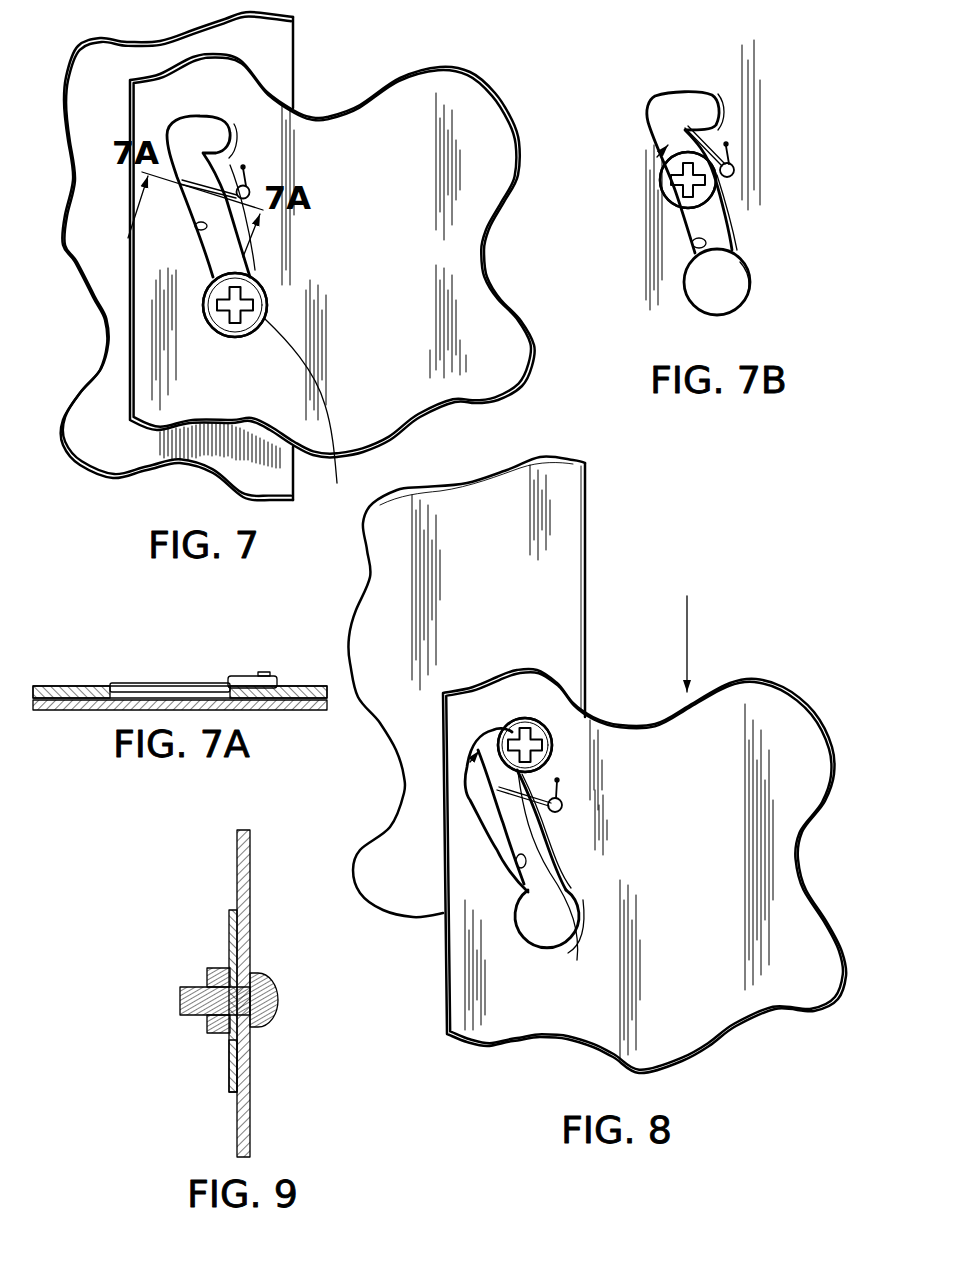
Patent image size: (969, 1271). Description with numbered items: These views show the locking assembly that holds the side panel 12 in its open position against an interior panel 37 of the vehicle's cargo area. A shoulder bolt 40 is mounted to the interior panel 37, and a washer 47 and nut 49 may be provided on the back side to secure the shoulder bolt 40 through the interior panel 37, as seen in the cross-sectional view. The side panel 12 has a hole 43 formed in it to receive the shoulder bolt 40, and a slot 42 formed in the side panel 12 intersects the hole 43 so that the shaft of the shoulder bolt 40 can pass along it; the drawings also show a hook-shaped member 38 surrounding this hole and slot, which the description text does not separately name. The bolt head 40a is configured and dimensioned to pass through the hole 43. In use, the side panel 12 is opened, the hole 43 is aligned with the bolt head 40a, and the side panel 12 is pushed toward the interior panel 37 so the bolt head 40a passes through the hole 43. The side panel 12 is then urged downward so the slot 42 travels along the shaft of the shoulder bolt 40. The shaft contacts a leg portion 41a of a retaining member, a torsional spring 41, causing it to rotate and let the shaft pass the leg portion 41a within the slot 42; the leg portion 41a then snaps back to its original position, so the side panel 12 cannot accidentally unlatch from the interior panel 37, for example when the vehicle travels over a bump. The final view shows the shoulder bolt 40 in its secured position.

In FIG. 7, the side panel 12 is at (389, 160).
In FIG. 7B, the side panel 12 is at (697, 339).
In FIG. 7A, the side panel 12 is at (73, 686).
In FIG. 9, the side panel 12 is at (250, 863).
In FIG. 8, the side panel 12 is at (692, 776).
In FIG. 7, the interior panel 37 is at (275, 41).
In FIG. 7A, the interior panel 37 is at (70, 710).
In FIG. 9, the interior panel 37 is at (233, 903).
In FIG. 8, the interior panel 37 is at (513, 601).
In FIG. 7, the hook 38 is at (190, 136).
In FIG. 7B, the hook 38 is at (667, 103).
In FIG. 8, the hook 38 is at (524, 840).
In FIG. 7, the shoulder bolt 40 is at (204, 305).
In FIG. 7B, the shoulder bolt 40 is at (688, 180).
In FIG. 7A, the shoulder bolt 40 is at (322, 676).
In FIG. 9, the shoulder bolt 40 is at (198, 1016).
In FIG. 8, the shoulder bolt 40 is at (508, 722).
In FIG. 7, the bolt head 40a is at (264, 280).
In FIG. 7B, the bolt head 40a is at (704, 192).
In FIG. 9, the bolt head 40a is at (266, 982).
In FIG. 8, the bolt head 40a is at (541, 727).
In FIG. 7, the torsional spring 41 is at (250, 183).
In FIG. 7B, the torsional spring 41 is at (735, 168).
In FIG. 8, the torsional spring 41 is at (561, 797).
In FIG. 7, the leg portion 41a is at (182, 181).
In FIG. 7B, the leg portion 41a is at (717, 137).
In FIG. 7A, the leg portion 41a is at (180, 683).
In FIG. 8, the leg portion 41a is at (497, 793).
In FIG. 7, the slot 42 is at (196, 231).
In FIG. 7B, the slot 42 is at (692, 248).
In FIG. 8, the slot 42 is at (515, 868).
In FIG. 7, the hole 43 is at (309, 411).
In FIG. 8, the hole 43 is at (546, 949).
In FIG. 9, the washer 47 is at (228, 1080).
In FIG. 9, the nut 49 is at (212, 970).